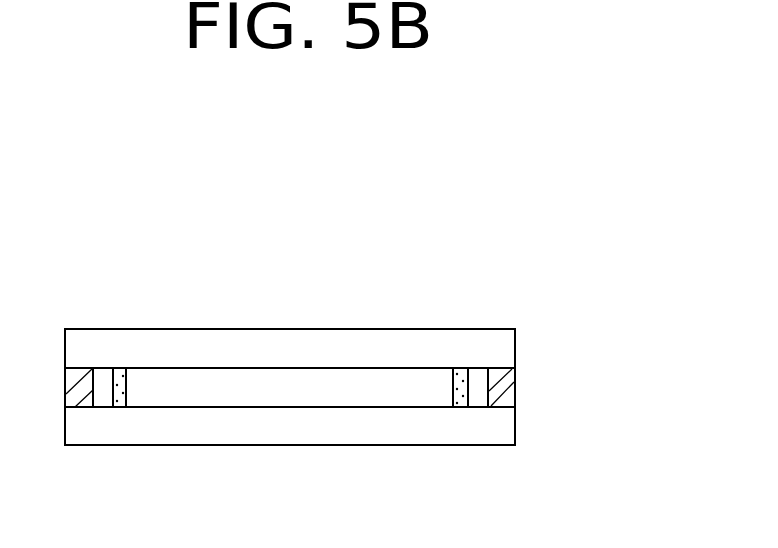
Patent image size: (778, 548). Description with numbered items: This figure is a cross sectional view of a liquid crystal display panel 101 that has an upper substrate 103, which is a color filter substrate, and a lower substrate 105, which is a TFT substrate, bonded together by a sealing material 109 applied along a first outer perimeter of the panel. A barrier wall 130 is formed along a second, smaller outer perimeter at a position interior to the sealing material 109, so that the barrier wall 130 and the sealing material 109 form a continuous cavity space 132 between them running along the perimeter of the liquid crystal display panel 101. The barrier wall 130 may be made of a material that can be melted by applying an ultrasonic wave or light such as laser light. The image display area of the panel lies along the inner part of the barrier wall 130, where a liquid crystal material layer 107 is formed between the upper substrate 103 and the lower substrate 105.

The liquid crystal display panel 101 is at (522, 296).
The upper substrate 103 is at (456, 350).
The lower substrate 105 is at (453, 430).
The liquid crystal material layer 107 is at (302, 387).
The sealing material 109 is at (82, 394).
The barrier wall 130 is at (122, 382).
The cavity space 132 is at (478, 390).